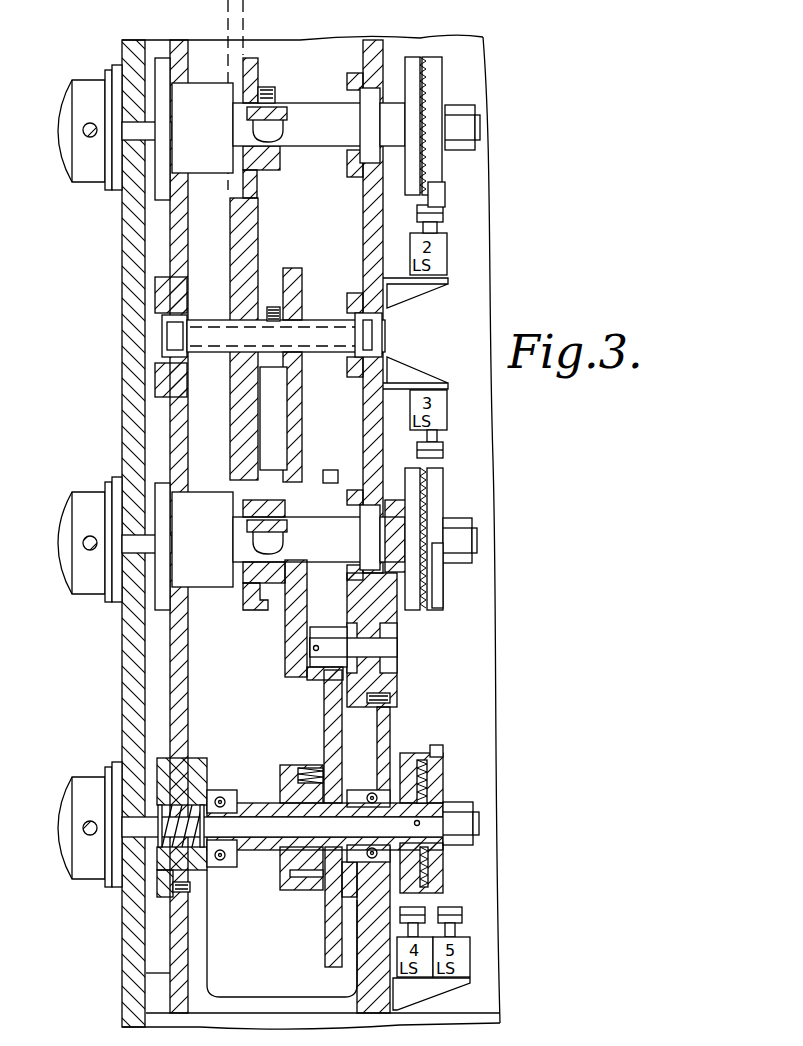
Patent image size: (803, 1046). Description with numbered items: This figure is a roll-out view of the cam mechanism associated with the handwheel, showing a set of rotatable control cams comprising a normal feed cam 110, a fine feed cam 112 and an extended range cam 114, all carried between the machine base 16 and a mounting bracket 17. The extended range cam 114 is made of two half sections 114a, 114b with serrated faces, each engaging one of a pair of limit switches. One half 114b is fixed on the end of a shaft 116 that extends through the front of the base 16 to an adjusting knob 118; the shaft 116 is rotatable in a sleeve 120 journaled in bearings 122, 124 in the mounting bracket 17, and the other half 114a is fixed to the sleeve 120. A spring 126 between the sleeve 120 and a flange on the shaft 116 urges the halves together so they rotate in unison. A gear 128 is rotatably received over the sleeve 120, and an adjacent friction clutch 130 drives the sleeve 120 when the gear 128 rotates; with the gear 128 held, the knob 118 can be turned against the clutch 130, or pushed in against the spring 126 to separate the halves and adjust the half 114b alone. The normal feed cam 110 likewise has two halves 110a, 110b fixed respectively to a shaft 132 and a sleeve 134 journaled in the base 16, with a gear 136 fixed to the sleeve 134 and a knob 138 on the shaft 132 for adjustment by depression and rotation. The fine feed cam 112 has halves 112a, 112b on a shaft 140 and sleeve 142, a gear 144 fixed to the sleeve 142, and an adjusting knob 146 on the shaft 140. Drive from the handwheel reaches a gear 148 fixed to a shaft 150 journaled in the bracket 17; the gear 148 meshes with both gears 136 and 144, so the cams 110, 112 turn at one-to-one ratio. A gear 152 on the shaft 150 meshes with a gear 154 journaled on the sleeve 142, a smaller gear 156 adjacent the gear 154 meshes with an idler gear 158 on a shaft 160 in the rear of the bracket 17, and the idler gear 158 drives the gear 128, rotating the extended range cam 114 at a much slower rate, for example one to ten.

The machine base 16 is at (121, 648).
The mounting bracket 17 is at (172, 683).
The normal feed cam 110 is at (447, 108).
The cam half 110a is at (408, 56).
The cam half 110b is at (442, 65).
The fine feed cam 112 is at (466, 544).
The cam half 112a is at (410, 610).
The cam half 112b is at (443, 598).
The extended range cam 114 is at (469, 813).
The cam half 114a is at (431, 739).
The cam half 114b is at (443, 882).
The shaft 116 is at (293, 835).
The adjusting knob 118 is at (62, 808).
The sleeve 120 is at (273, 868).
The bearing 122 is at (222, 862).
The bearing 124 is at (324, 761).
The spring 126 is at (192, 797).
The gear 128 is at (325, 933).
The friction clutch 130 is at (284, 890).
The shaft 132 is at (150, 128).
The sleeve 134 is at (300, 103).
The gear 136 is at (270, 192).
The knob 138 is at (62, 113).
The shaft 140 is at (125, 533).
The sleeve 142 is at (240, 558).
The gear 144 is at (245, 598).
The adjusting knob 146 is at (72, 508).
The gear 148 is at (258, 250).
The shaft 150 is at (233, 373).
The gear 152 is at (302, 288).
The gear 154 is at (305, 421).
The smaller gear 156 is at (330, 468).
The idler gear 158 is at (323, 673).
The shaft 160 is at (373, 660).